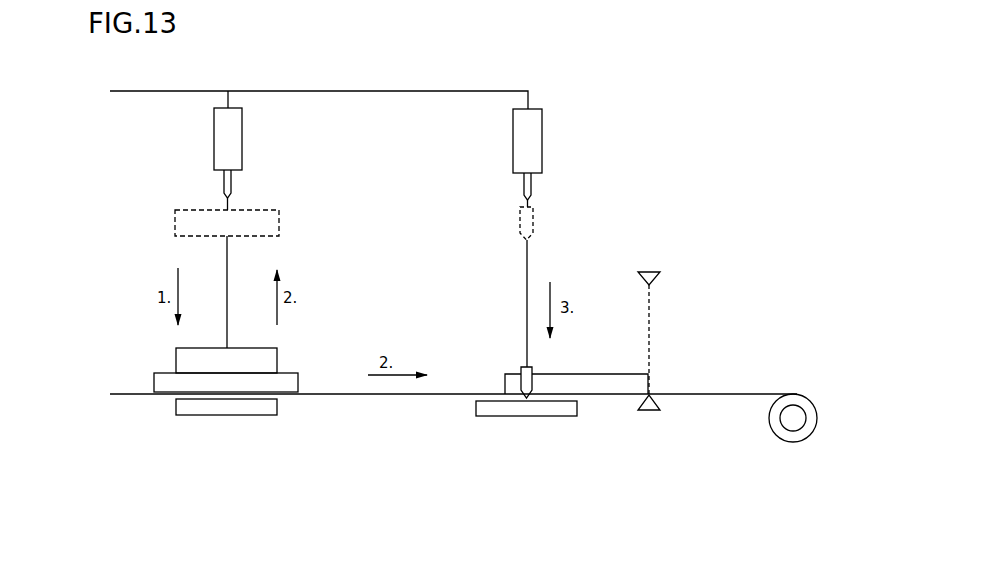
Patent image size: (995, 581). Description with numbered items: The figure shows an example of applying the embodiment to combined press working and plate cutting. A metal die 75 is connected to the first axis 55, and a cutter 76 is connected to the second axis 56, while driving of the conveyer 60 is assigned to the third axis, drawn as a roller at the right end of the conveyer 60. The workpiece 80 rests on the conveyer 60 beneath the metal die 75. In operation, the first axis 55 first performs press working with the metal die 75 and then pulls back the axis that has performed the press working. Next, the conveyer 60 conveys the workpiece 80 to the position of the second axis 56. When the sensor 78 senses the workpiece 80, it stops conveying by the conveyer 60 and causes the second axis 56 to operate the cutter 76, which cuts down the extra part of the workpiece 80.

The first axis 55 is at (242, 108).
The second axis 56 is at (540, 109).
The conveyer 60 is at (763, 395).
The metal die 75 is at (279, 210).
The cutter 76 is at (535, 222).
The sensor 78 is at (658, 272).
The workpiece 80 is at (153, 387).